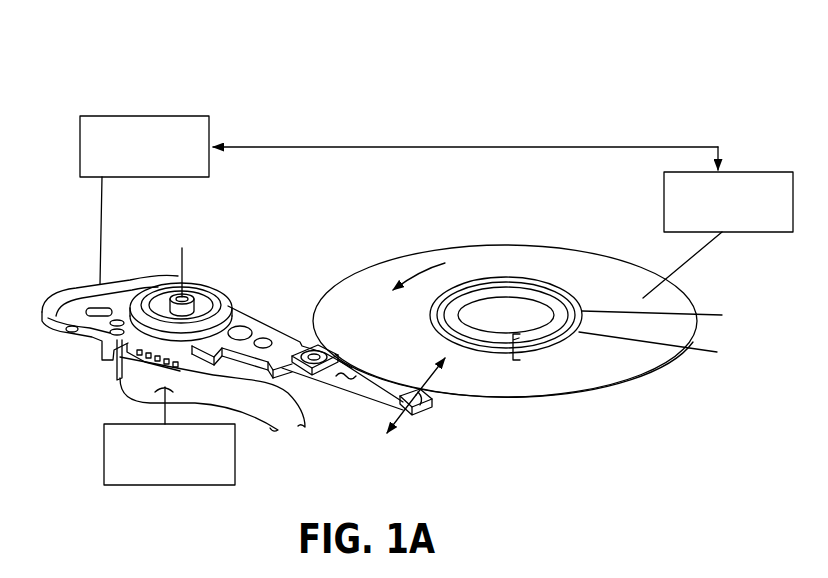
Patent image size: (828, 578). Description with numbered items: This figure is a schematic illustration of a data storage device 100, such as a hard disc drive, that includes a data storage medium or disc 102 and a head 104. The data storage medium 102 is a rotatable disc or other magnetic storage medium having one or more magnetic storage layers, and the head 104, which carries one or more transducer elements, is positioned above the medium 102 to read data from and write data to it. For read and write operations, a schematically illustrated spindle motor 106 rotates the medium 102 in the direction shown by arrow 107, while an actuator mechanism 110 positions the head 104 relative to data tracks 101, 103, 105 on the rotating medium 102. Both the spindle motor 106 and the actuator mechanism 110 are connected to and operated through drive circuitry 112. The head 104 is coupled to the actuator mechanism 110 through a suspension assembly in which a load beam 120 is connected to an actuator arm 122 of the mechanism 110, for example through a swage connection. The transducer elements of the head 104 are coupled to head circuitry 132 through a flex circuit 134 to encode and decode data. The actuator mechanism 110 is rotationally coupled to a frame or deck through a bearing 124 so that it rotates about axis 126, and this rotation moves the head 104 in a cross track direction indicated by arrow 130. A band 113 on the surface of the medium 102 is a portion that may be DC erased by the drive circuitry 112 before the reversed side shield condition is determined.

The data storage device 100 is at (634, 112).
The data track 101 is at (670, 314).
The data storage medium 102 is at (591, 276).
The data track 103 is at (667, 347).
The head 104 is at (418, 406).
The data track 105 is at (525, 291).
The spindle motor 106 is at (765, 172).
The arrow 107 is at (410, 276).
The actuator mechanism 110 is at (199, 276).
The drive circuitry 112 is at (185, 116).
The band 113 is at (522, 346).
The load beam 120 is at (348, 370).
The actuator arm 122 is at (269, 315).
The bearing 124 is at (170, 310).
The axis 126 is at (181, 263).
The arrow 130 is at (430, 395).
The head circuitry 132 is at (104, 452).
The flex circuit 134 is at (222, 398).